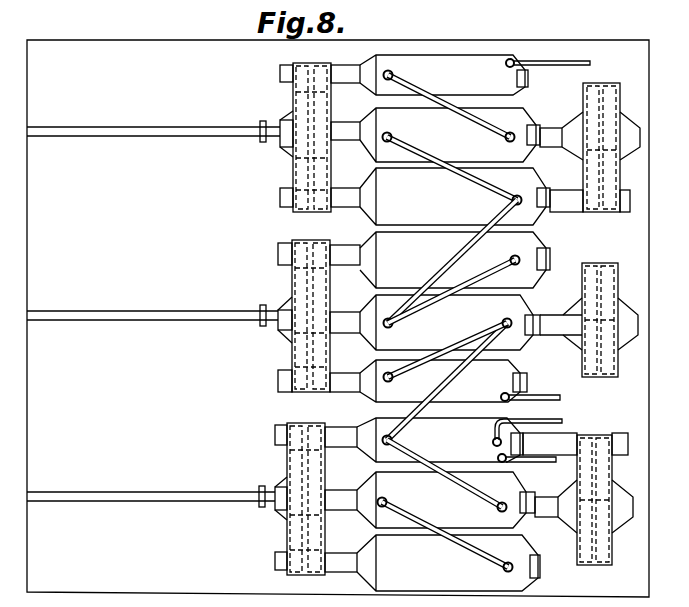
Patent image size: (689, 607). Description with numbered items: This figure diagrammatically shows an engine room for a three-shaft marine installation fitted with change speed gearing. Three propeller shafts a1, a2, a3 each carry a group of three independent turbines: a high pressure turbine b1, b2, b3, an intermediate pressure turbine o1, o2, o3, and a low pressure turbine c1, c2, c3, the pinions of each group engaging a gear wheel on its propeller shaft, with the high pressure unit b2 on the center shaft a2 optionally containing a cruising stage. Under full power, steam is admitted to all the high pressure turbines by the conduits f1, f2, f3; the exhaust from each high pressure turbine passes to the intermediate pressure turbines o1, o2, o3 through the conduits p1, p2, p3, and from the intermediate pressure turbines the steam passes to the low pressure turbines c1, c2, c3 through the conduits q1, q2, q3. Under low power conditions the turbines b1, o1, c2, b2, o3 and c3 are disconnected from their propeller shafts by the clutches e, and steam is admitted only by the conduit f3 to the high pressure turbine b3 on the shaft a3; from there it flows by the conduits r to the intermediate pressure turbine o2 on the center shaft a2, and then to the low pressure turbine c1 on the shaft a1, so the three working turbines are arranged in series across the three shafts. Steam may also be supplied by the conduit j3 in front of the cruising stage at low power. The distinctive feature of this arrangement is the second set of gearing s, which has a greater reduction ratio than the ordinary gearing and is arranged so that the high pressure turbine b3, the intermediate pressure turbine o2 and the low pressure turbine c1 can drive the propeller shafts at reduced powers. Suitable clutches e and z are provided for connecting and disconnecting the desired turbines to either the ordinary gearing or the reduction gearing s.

The shaft a1 is at (93, 133).
The center shaft a2 is at (93, 317).
The shaft a3 is at (93, 498).
The high pressure turbine b1 is at (444, 75).
The high pressure unit b2 is at (443, 381).
The high pressure turbine b3 is at (440, 440).
The low pressure turbine c1 is at (455, 196).
The low pressure turbine c2 is at (455, 260).
The low pressure turbine c3 is at (448, 563).
The intermediate pressure turbine o1 is at (450, 135).
The intermediate pressure turbine o2 is at (450, 322).
The intermediate pressure turbine o3 is at (446, 500).
The conduit p1 is at (473, 121).
The conduit p2 is at (448, 359).
The conduit p3 is at (447, 481).
The conduit q1 is at (497, 197).
The conduit q2 is at (493, 269).
The conduit q3 is at (493, 560).
The conduits r is at (450, 324).
The clutches e is at (352, 83).
The clutches z is at (560, 200).
The second set of gearing s is at (602, 175).
The conduit f1 is at (602, 55).
The conduit f2 is at (562, 398).
The conduit f3 is at (562, 420).
The conduit j3 is at (527, 473).